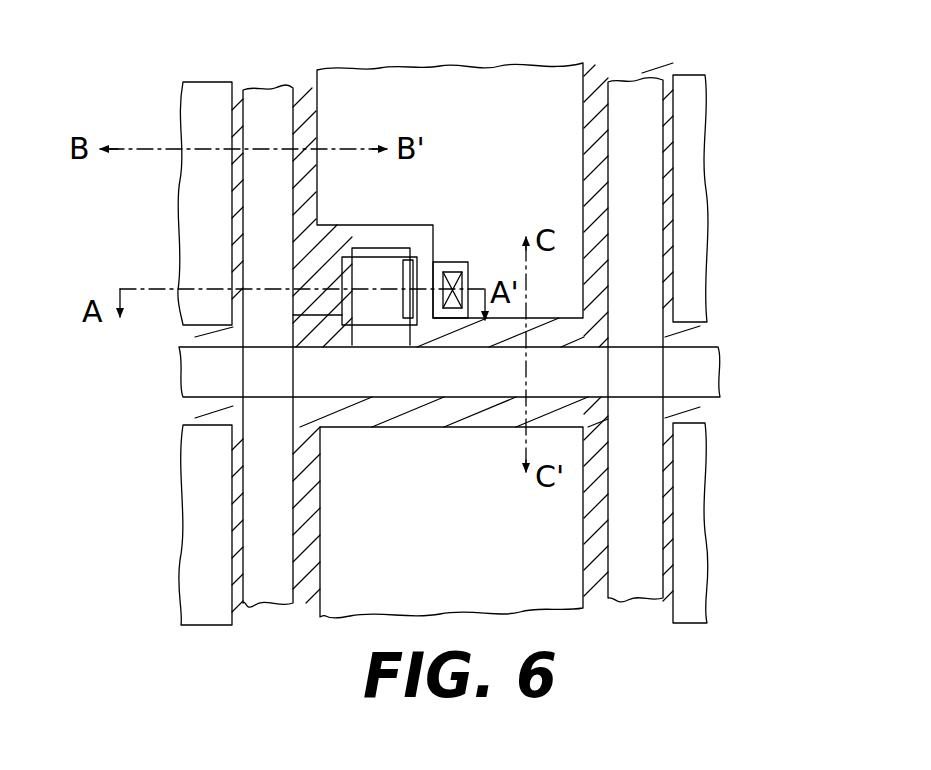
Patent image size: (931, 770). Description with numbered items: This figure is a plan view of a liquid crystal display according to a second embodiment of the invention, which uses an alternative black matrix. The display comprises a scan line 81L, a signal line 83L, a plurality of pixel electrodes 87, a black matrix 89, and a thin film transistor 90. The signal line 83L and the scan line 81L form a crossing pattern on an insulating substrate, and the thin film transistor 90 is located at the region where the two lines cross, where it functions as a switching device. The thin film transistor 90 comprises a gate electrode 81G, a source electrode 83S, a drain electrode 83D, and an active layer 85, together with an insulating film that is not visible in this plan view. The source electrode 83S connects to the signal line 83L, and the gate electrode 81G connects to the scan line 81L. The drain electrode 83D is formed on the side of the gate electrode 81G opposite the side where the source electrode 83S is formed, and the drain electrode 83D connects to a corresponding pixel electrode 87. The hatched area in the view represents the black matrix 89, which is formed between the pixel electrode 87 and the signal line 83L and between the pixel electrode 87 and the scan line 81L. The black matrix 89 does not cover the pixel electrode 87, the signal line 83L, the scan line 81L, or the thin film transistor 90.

The scan line 81L is at (722, 358).
The gate electrode 81G is at (410, 246).
The signal line 83L is at (270, 88).
The source electrode 83S is at (318, 238).
The drain electrode 83D is at (452, 260).
The active layer 85 is at (368, 248).
The pixel electrode 87 is at (457, 90).
The black matrix 89 is at (232, 242).
The thin film transistor 90 is at (425, 172).